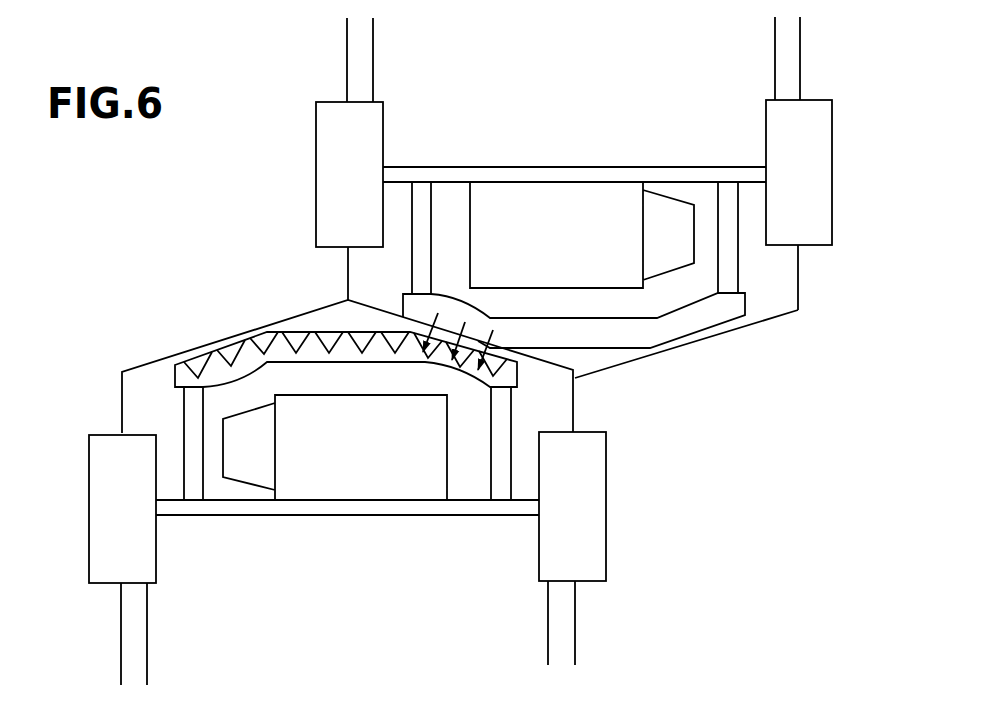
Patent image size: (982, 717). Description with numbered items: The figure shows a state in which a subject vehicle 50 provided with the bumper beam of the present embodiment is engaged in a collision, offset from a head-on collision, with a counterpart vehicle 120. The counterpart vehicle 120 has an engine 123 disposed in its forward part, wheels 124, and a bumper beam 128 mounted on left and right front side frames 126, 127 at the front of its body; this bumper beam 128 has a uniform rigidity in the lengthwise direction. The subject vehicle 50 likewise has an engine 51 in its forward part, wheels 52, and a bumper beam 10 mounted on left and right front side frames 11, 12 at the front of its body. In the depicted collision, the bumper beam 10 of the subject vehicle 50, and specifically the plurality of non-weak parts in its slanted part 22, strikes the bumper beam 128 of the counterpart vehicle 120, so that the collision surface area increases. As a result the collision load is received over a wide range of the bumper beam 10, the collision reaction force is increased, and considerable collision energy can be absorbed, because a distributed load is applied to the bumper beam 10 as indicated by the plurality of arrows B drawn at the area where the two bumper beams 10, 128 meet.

The other vehicle 120 is at (347, 53).
The wheels 124 is at (322, 172).
The front side frame 127 is at (420, 190).
The engine 123 is at (557, 195).
The front side frame 126 is at (727, 193).
The bumper beam 128 is at (693, 323).
The bumper beam 10 is at (175, 375).
The slanted part 22 is at (468, 380).
The arrows B is at (458, 331).
The front side frame 11 is at (193, 493).
The front side frame 12 is at (503, 492).
The engine 51 is at (343, 487).
The wheels 52 is at (102, 503).
The subject vehicle 50 is at (118, 646).